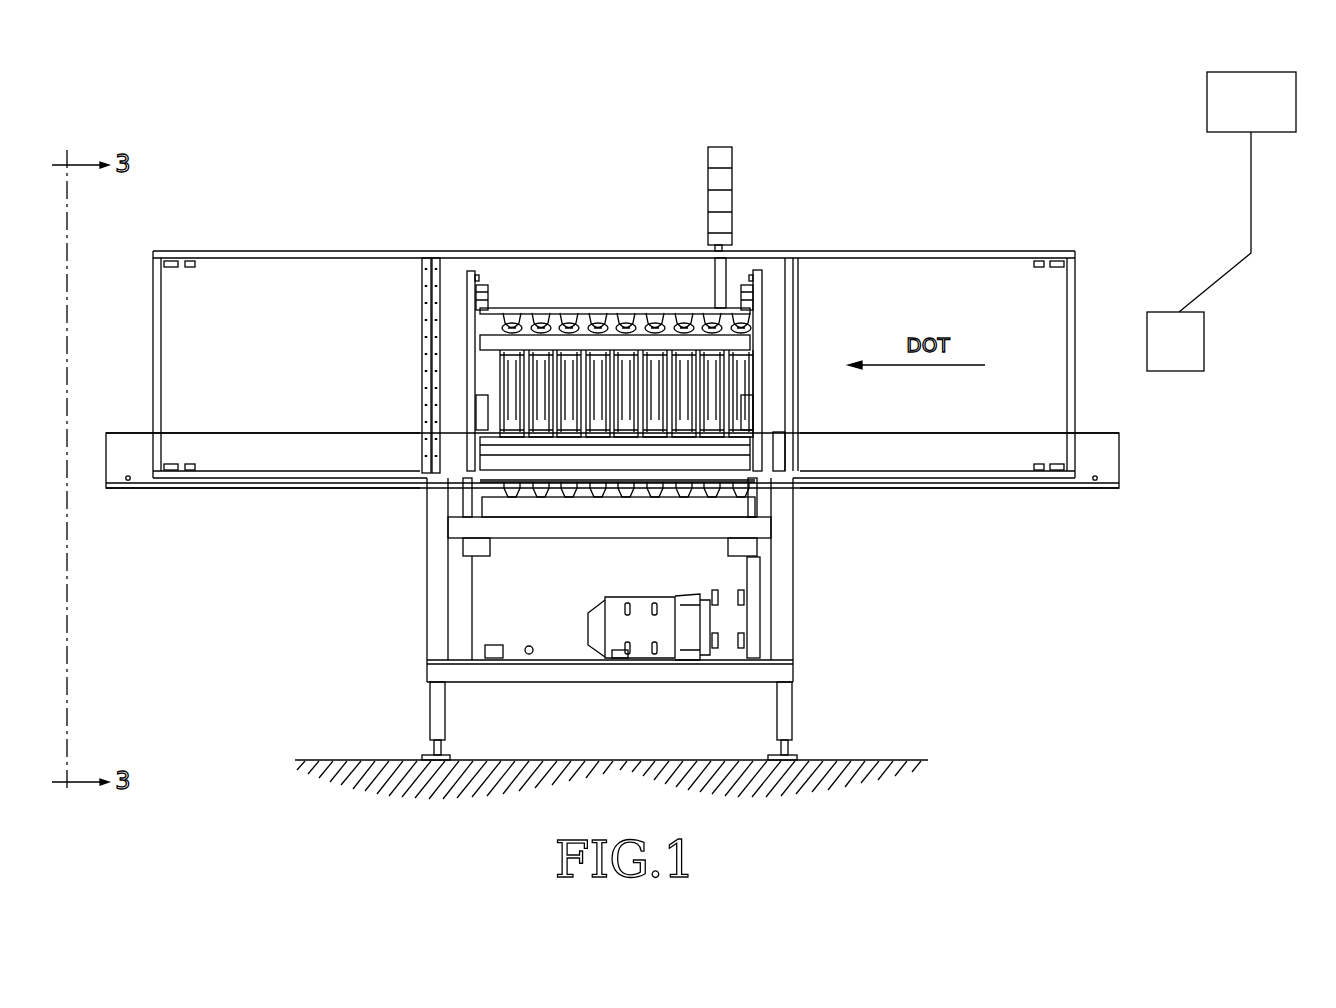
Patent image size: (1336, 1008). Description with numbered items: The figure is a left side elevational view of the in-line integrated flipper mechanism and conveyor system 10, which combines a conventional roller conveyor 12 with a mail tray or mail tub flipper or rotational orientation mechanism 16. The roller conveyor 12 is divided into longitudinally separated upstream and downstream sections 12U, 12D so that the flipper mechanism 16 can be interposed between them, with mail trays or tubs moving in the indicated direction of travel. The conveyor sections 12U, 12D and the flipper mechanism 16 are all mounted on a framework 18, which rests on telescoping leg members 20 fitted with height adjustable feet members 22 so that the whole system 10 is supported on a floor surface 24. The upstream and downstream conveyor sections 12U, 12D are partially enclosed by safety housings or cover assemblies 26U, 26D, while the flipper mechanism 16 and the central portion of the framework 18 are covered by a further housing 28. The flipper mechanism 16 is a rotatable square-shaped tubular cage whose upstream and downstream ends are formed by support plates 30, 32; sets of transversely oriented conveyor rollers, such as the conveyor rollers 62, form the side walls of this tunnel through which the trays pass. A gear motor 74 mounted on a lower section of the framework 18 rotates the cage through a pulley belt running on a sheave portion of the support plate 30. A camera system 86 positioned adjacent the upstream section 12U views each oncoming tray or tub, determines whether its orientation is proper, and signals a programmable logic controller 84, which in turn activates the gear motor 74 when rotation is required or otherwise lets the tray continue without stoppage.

The in-line integrated flipper mechanism and conveyor system 10 is at (1006, 114).
The roller conveyor 12 is at (1032, 488).
The downstream roller conveyor section 12D is at (254, 452).
The upstream roller conveyor section 12U is at (970, 442).
The mail tray or mail tub flipper or rotational orientation mechanism 16 is at (620, 290).
The framework 18 is at (793, 608).
The telescoping leg members 20 is at (785, 716).
The height adjustable feet members 22 is at (452, 752).
The floor surface 24 is at (585, 760).
The downstream safety housing or cover assembly 26D is at (307, 251).
The upstream safety housing or cover assembly 26U is at (862, 251).
The safety housing or cover assembly 28 is at (557, 251).
The upstream end support plate 30 is at (762, 330).
The downstream end support plate 32 is at (442, 345).
The conveyor rollers 62 is at (510, 370).
The gear motor 74 is at (640, 612).
The programmable logic controller 84 is at (1277, 132).
The camera system 86 is at (1172, 371).